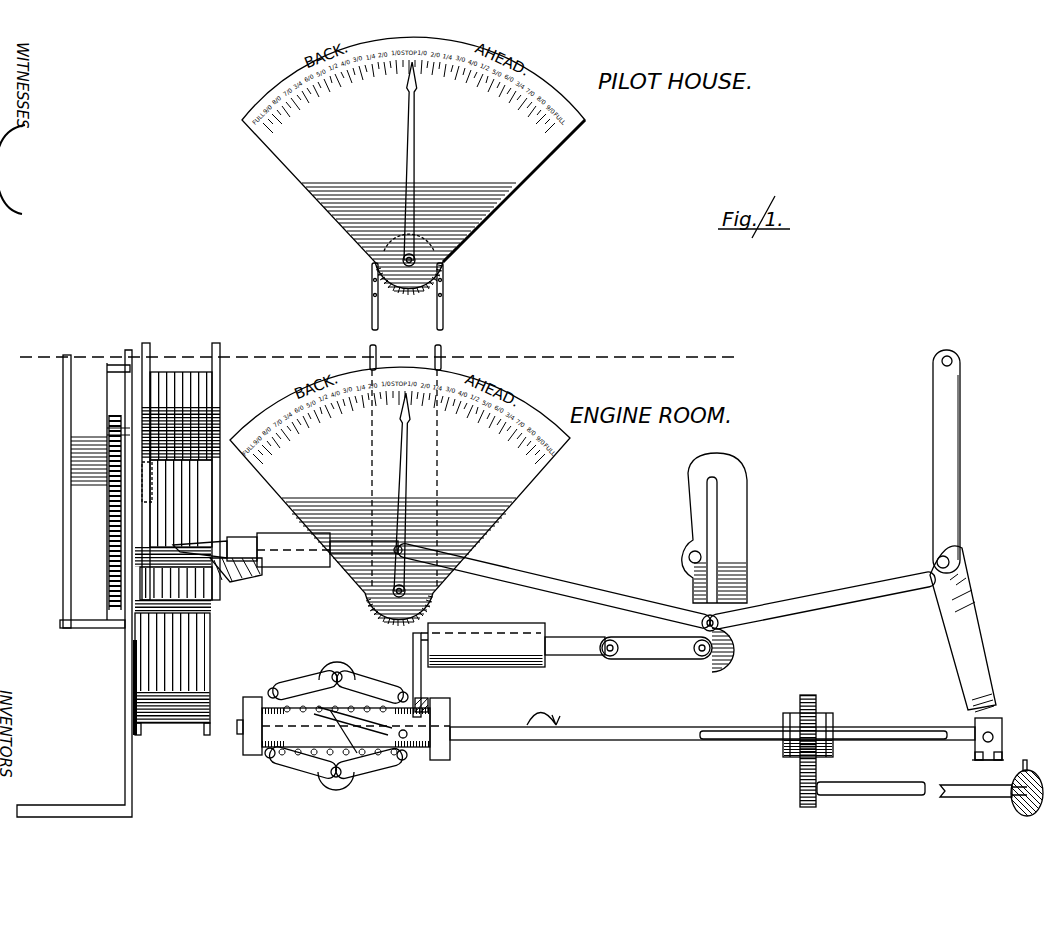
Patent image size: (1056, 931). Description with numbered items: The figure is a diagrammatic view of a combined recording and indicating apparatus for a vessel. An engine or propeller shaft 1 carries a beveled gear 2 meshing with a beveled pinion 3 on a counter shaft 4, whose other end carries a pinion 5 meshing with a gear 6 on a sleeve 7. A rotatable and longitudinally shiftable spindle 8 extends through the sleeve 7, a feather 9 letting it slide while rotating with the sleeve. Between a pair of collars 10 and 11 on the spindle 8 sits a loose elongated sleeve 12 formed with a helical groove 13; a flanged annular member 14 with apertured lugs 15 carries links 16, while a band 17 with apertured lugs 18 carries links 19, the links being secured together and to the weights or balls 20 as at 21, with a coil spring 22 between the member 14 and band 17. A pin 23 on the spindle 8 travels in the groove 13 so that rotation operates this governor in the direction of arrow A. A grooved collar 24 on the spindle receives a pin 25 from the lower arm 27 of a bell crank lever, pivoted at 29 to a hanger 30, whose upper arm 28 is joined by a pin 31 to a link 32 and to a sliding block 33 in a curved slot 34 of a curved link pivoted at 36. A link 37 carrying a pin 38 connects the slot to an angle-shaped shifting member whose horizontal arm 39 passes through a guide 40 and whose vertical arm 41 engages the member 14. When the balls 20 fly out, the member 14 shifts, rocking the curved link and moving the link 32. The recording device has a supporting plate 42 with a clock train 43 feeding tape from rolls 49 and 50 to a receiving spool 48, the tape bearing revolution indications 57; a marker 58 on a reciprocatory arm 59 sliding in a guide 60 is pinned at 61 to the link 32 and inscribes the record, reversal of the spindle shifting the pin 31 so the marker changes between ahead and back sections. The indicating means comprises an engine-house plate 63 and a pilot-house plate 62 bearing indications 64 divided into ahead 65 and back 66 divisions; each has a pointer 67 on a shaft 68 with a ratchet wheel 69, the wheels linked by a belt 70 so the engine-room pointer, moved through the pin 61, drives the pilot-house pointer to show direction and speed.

The engine or propeller shaft 1 is at (1048, 829).
The beveled gear 2 is at (1022, 755).
The beveled pinion 3 is at (1010, 800).
The counter shaft 4 is at (955, 797).
The pinion 5 is at (814, 790).
The gear 6 is at (822, 702).
The sleeve 7 is at (785, 745).
The spindle 8 is at (633, 741).
The feather 9 is at (735, 730).
The collar 10 is at (451, 756).
The collar 11 is at (246, 748).
The elongated sleeve 12 is at (300, 762).
The helical groove 13 is at (345, 770).
The flanged annular member 14 is at (455, 703).
The apertured lugs 15 is at (410, 758).
The links 16 is at (386, 764).
The band 17 is at (272, 762).
The apertured lugs 18 is at (268, 686).
The links 19 is at (297, 686).
The weights or balls 20 is at (360, 682).
The pivot 21 is at (338, 672).
The coil spring 22 is at (366, 703).
The pin 23 is at (409, 731).
The grooved collar 24 is at (975, 752).
The pin 25 is at (1000, 716).
The lower arm 27 is at (985, 626).
The upper arm 28 is at (848, 588).
The pivot 29 is at (951, 559).
The hanger 30 is at (945, 438).
The pin 31 is at (720, 618).
The link 32 is at (652, 600).
The sliding block 33 is at (736, 596).
The curved slot 34 is at (724, 482).
The pivot 36 is at (690, 553).
The link 37 is at (670, 660).
The pin 38 is at (611, 657).
The horizontal arm 39 is at (566, 637).
The guide 40 is at (535, 667).
The vertical arm 41 is at (422, 685).
The supporting plate 42 is at (124, 692).
The clock train 43 is at (113, 607).
The receiving spool 48 is at (172, 725).
The roll 49 is at (236, 580).
The roll 50 is at (212, 605).
The indications 57 is at (214, 483).
The marker 58 is at (178, 545).
The reciprocatory arm 59 is at (248, 540).
The guide 60 is at (302, 567).
The pin 61 is at (408, 560).
The indicating plate 62 is at (423, 237).
The indicating plate 63 is at (400, 493).
The indications 64 is at (519, 191).
The ahead division 65 is at (413, 162).
The back division 66 is at (409, 84).
The pointer 67 is at (406, 126).
The shaft 68 is at (380, 247).
The ratchet wheel 69 is at (409, 296).
The belt 70 is at (387, 296).
The arrow A is at (540, 745).